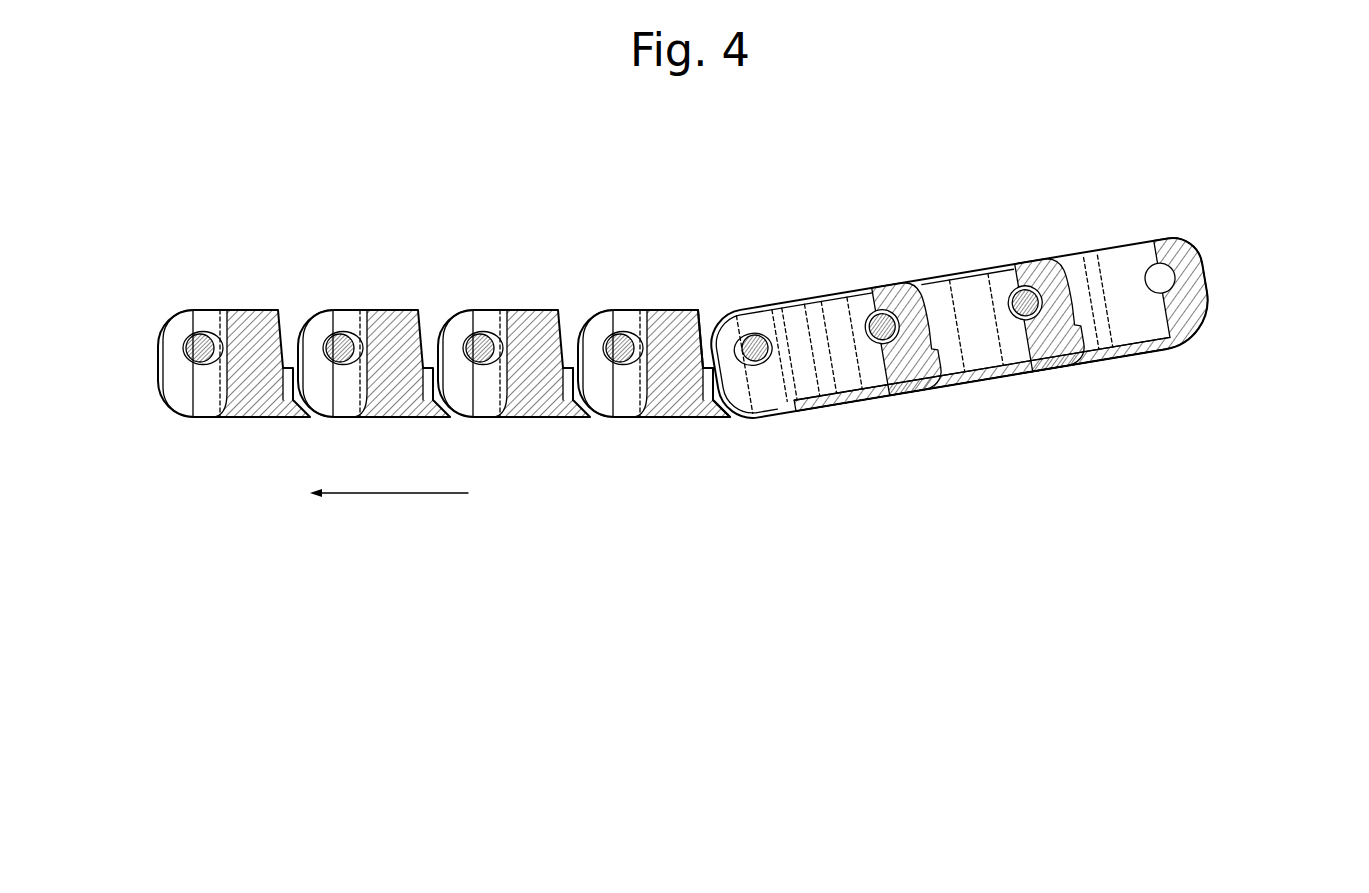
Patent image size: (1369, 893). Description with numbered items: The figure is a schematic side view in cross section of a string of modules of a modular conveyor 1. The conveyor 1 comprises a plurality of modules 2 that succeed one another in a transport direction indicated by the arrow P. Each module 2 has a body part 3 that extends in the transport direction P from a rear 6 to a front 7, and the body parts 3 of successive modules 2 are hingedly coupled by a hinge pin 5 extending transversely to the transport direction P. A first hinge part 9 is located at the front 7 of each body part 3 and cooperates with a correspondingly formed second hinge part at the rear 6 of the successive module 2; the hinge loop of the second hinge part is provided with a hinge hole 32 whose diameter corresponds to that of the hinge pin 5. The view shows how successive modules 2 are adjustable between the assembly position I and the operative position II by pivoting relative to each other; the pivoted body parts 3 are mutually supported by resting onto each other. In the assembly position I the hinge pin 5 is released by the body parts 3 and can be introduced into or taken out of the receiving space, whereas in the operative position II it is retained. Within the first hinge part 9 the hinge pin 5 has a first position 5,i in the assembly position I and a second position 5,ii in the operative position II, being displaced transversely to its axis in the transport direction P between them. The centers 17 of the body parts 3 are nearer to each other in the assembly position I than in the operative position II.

The modular conveyor 1 is at (140, 439).
The module 2 is at (624, 455).
The body part 3 is at (393, 316).
The hinge pin 5 is at (202, 335).
The hinge pin in first position 5,i is at (760, 335).
The hinge pin in second position 5,ii is at (625, 335).
The rear 6 is at (571, 309).
The front 7 is at (440, 307).
The first hinge part 9 is at (722, 296).
The center 17 is at (535, 322).
The hinge hole 32 is at (1161, 275).
The assembly position I is at (757, 464).
The operative position II is at (649, 241).
The transport direction P is at (390, 495).